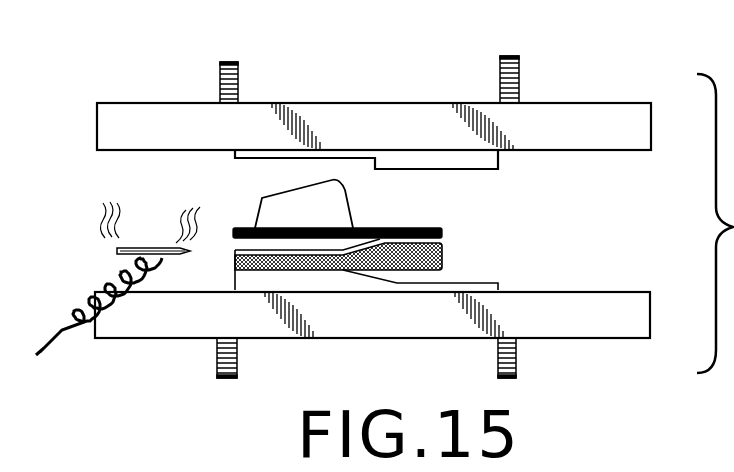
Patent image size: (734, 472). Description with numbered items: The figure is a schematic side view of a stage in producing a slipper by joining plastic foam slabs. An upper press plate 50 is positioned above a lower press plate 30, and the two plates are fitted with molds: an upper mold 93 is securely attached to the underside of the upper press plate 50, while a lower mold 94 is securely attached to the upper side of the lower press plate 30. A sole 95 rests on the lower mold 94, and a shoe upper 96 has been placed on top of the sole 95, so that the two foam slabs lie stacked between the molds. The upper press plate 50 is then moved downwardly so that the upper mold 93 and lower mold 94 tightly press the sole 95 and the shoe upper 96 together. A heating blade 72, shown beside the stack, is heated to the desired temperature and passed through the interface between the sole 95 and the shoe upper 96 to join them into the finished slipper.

The upper press plate 50 is at (620, 118).
The lower press plate 30 is at (621, 318).
The upper mold 93 is at (489, 169).
The shoe upper 96 is at (391, 218).
The sole 95 is at (442, 253).
The lower mold 94 is at (488, 278).
The heating blade 72 is at (121, 256).